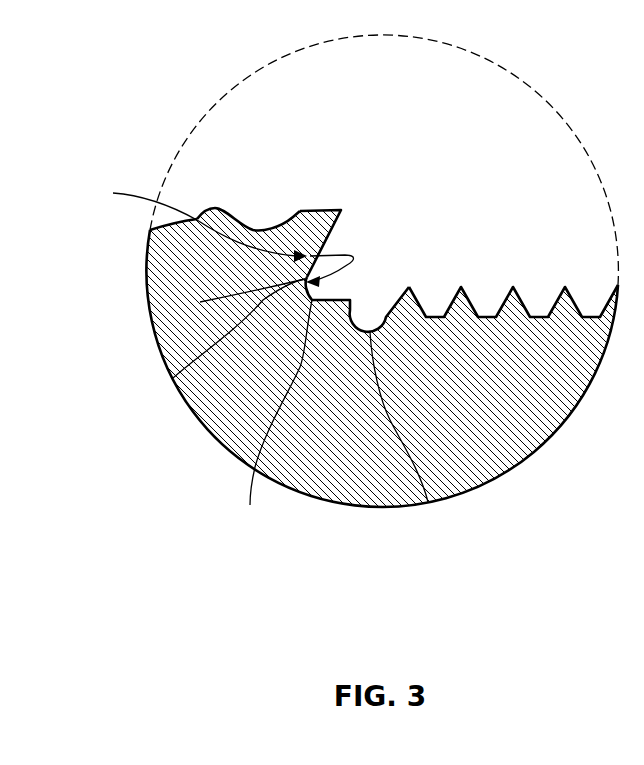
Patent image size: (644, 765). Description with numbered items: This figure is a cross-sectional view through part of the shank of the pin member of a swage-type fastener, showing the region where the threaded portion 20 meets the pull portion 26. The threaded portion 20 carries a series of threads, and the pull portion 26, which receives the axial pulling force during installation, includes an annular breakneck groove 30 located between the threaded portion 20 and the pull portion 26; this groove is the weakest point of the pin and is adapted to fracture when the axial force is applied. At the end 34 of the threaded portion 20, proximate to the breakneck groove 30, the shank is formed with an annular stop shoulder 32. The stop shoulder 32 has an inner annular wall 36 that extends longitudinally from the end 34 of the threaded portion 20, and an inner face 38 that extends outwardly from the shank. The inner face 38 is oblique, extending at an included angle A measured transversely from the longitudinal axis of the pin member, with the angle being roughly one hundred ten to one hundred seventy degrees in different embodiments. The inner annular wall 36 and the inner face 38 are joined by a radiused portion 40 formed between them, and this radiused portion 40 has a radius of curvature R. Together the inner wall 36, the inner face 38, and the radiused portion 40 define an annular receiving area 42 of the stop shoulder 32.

The threaded portion 20 is at (190, 265).
The pull portion 26 is at (510, 385).
The breakneck groove 30 is at (428, 502).
The stop shoulder 32 is at (323, 211).
The end of the threaded portion 34 is at (297, 218).
The inner annular wall 36 is at (340, 300).
The inner face 38 is at (200, 302).
The radiused portion 40 is at (173, 378).
The annular receiving area 42 is at (350, 255).
The included angle A is at (199, 221).
The radius of curvature R is at (278, 417).